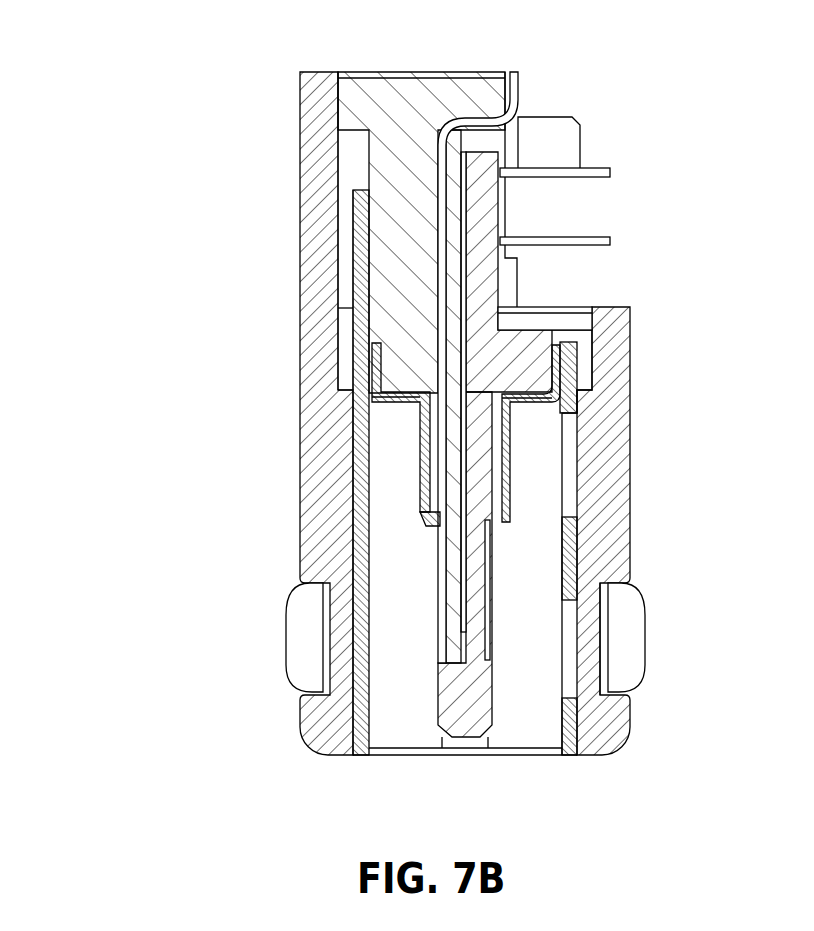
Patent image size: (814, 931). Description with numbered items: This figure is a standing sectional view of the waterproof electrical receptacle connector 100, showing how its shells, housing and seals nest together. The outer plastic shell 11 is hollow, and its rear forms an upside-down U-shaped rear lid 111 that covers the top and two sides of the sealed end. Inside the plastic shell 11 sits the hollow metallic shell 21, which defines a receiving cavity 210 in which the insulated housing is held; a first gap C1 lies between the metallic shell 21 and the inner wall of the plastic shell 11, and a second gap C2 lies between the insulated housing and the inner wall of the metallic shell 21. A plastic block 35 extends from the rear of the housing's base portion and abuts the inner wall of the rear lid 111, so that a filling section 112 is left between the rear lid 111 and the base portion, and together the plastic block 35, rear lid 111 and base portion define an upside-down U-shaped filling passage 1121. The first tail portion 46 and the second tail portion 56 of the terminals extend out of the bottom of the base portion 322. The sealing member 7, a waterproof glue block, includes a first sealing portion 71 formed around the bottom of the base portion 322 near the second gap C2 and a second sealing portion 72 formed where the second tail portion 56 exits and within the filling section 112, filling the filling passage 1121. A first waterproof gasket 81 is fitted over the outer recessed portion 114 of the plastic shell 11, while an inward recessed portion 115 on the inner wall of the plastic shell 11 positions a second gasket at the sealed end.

The waterproof electrical receptacle connector 100 is at (87, 257).
The plastic shell 11 is at (430, 413).
The rear lid 111 is at (320, 328).
The filling section 112 is at (360, 176).
The filling passage 1121 is at (346, 162).
The outer recessed portion 114 is at (608, 602).
The inward recessed portion 115 is at (583, 378).
The metallic shell 21 is at (352, 458).
The receiving cavity 210 is at (412, 680).
The plastic block 35 is at (358, 100).
The first tail portion 46 is at (513, 92).
The second tail portion 56 is at (606, 170).
The sealing member 7 is at (481, 338).
The first sealing portion 71 is at (543, 298).
The second sealing portion 72 is at (518, 206).
The bottom of the base portion 322 is at (572, 307).
The first gap C1 is at (372, 300).
The second gap C2 is at (345, 370).
The first waterproof gasket 81 is at (310, 640).